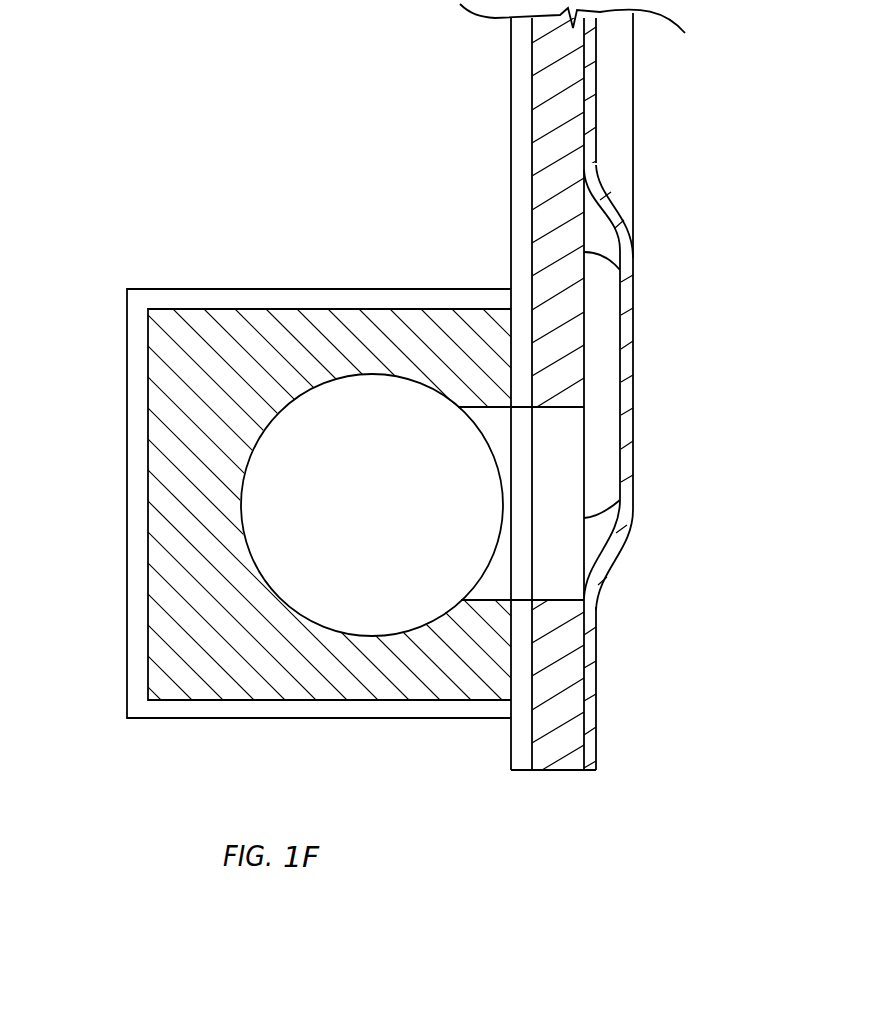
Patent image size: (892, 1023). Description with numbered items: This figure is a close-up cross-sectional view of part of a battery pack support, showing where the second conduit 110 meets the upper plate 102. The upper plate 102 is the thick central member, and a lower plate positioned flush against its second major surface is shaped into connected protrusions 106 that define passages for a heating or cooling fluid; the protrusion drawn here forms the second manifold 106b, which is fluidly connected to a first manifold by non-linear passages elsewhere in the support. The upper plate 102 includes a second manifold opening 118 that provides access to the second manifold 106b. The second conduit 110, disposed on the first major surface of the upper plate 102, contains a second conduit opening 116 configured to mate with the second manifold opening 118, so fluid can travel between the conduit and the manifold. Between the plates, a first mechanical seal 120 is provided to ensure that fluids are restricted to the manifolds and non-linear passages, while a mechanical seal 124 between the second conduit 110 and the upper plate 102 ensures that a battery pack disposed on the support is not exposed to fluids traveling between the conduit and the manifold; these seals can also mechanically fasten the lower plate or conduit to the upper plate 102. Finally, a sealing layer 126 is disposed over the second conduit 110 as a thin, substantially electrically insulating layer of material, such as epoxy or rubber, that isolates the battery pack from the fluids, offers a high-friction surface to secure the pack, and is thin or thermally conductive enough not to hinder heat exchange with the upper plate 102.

The upper plate 102 is at (550, 783).
The protrusions 106 is at (644, 150).
The second manifold 106b is at (640, 456).
The second conduit 110 is at (130, 643).
The second conduit opening 116 is at (486, 606).
The second manifold opening 118 is at (564, 400).
The first mechanical seal 120 is at (590, 777).
The mechanical seal 124 is at (522, 307).
The sealing layer 126 is at (289, 287).